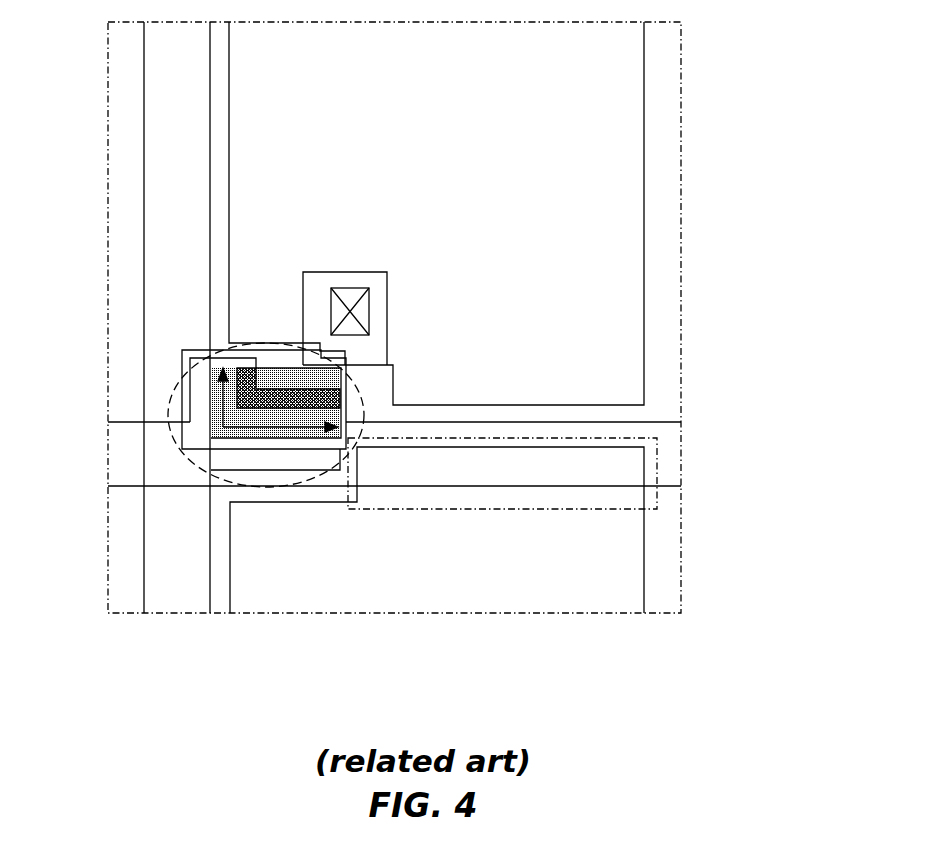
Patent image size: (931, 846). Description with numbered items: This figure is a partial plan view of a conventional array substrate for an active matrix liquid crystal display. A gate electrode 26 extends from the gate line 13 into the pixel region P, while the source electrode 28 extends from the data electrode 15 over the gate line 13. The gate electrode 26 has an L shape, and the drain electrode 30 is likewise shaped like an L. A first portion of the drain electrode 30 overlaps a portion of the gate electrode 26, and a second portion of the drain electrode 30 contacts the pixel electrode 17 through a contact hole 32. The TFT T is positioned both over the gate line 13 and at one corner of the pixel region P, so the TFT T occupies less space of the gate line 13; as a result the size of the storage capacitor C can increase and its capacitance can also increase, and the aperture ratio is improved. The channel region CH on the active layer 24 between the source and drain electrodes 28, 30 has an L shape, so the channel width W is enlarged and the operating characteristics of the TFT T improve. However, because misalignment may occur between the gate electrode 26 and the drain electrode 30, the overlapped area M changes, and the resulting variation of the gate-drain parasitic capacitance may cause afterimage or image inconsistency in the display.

The gate line 13 is at (683, 456).
The data electrode 15 is at (174, 590).
The pixel electrode 17 is at (644, 190).
The active layer 24 is at (181, 360).
The gate electrode 26 is at (345, 405).
The source electrode 28 is at (307, 458).
The drain electrode 30 is at (387, 294).
The contact hole 32 is at (348, 288).
The pixel region P is at (679, 280).
The TFT T is at (191, 423).
The storage capacitor C is at (553, 510).
The channel region CH is at (205, 393).
The overlapped area M is at (281, 390).
The channel width W is at (271, 420).